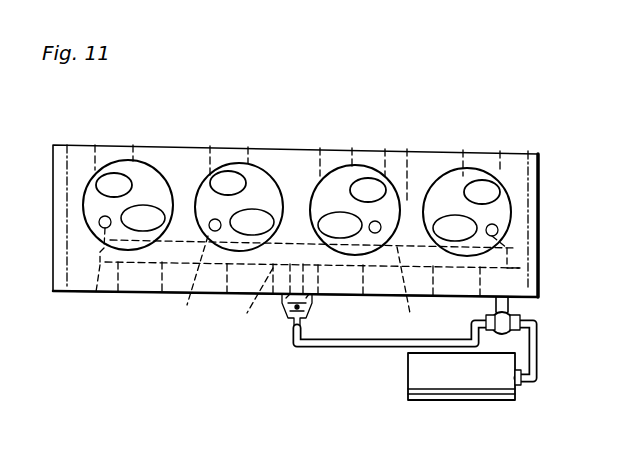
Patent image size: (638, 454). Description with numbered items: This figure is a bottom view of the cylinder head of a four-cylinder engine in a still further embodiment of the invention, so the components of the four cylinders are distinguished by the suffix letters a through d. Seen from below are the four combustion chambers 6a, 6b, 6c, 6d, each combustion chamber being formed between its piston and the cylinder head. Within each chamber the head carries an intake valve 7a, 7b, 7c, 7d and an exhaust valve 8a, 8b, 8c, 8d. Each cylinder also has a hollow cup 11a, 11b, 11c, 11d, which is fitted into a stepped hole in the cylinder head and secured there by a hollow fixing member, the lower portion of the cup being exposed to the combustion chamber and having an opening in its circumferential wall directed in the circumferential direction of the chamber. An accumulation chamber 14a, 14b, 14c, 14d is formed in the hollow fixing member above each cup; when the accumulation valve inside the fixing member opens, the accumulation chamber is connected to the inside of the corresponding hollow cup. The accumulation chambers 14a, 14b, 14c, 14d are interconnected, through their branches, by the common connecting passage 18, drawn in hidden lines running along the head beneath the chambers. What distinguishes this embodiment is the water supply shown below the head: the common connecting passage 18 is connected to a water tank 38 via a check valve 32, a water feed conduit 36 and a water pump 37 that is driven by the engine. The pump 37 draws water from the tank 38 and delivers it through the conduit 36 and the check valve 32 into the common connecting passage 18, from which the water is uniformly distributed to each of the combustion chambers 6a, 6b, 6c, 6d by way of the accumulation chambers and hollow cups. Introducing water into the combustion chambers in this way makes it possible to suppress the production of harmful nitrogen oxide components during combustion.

The combustion chamber 6a is at (96, 208).
The combustion chamber 6b is at (272, 199).
The combustion chamber 6c is at (385, 210).
The combustion chamber 6d is at (497, 210).
The intake valve 7a is at (143, 215).
The intake valve 7b is at (258, 221).
The intake valve 7c is at (340, 220).
The intake valve 7d is at (455, 225).
The exhaust valve 8a is at (112, 184).
The exhaust valve 8b is at (228, 182).
The exhaust valve 8c is at (368, 188).
The exhaust valve 8d is at (486, 192).
The hollow cup 11a is at (105, 226).
The hollow cup 11b is at (219, 222).
The hollow cup 11c is at (375, 233).
The hollow cup 11d is at (496, 231).
The accumulation chamber 14a is at (96, 292).
The accumulation chamber 14b is at (186, 282).
The accumulation chamber 14c is at (422, 288).
The accumulation chamber 14d is at (512, 252).
The common connecting passage 18 is at (250, 299).
The check valve 32 is at (280, 329).
The water feed conduit 36 is at (342, 343).
The water pump 37 is at (508, 305).
The water tank 38 is at (465, 388).